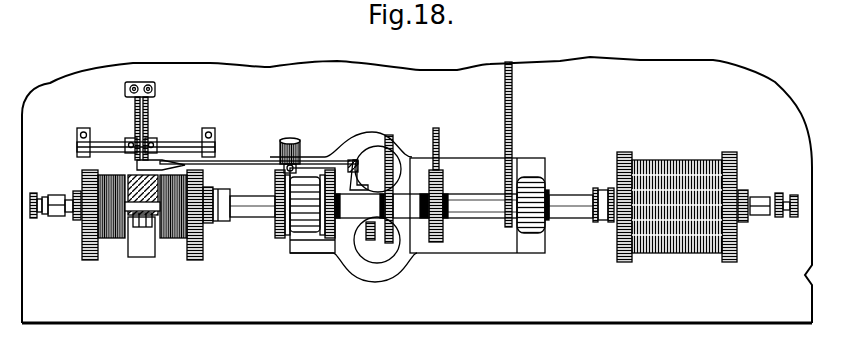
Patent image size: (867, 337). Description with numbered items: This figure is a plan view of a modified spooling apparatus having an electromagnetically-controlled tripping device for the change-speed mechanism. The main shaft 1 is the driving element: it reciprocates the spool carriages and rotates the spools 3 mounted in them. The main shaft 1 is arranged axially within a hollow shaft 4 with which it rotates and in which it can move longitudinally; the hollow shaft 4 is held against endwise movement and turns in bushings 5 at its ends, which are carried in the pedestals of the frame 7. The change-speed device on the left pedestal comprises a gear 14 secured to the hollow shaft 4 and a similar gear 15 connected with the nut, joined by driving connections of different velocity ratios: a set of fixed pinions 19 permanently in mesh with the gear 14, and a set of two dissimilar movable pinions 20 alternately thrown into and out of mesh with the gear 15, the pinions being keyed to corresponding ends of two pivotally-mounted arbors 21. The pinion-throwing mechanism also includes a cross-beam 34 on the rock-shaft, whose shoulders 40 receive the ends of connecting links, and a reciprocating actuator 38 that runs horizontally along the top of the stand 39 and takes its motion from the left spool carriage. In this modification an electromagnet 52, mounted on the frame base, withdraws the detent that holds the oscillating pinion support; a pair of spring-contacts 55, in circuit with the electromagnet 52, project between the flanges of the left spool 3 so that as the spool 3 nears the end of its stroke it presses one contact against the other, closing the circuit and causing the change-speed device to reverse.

The main shaft 1 is at (590, 208).
The spool 3 is at (690, 240).
The hollow shaft 4 is at (484, 206).
The bushing 5 is at (547, 190).
The frame 7 is at (477, 205).
The gear 14 is at (370, 236).
The gear 15 is at (272, 212).
The fixed pinion 19 is at (335, 160).
The movable pinion 20 is at (272, 172).
The arbor 21 is at (330, 170).
The cross-beam 34 is at (386, 165).
The actuator 38 is at (350, 160).
The stand 39 is at (417, 308).
The shoulder 40 is at (384, 258).
The electromagnet 52 is at (289, 139).
The spring-contact 55 is at (150, 114).